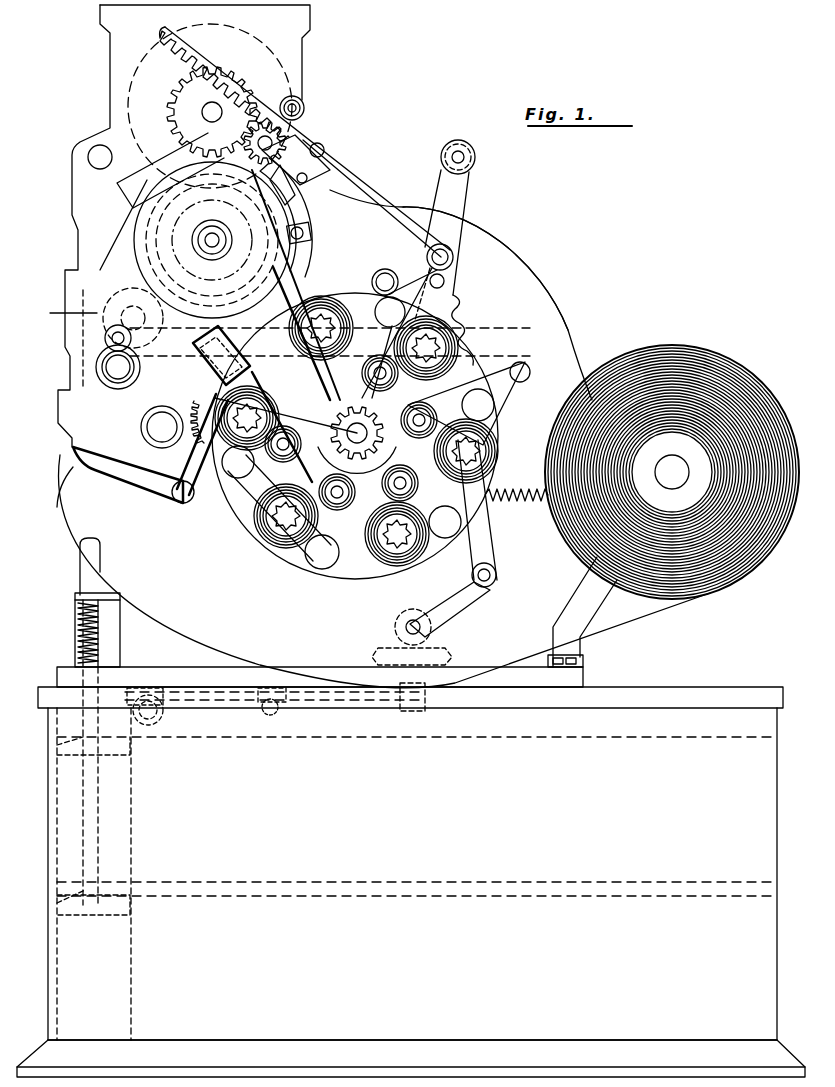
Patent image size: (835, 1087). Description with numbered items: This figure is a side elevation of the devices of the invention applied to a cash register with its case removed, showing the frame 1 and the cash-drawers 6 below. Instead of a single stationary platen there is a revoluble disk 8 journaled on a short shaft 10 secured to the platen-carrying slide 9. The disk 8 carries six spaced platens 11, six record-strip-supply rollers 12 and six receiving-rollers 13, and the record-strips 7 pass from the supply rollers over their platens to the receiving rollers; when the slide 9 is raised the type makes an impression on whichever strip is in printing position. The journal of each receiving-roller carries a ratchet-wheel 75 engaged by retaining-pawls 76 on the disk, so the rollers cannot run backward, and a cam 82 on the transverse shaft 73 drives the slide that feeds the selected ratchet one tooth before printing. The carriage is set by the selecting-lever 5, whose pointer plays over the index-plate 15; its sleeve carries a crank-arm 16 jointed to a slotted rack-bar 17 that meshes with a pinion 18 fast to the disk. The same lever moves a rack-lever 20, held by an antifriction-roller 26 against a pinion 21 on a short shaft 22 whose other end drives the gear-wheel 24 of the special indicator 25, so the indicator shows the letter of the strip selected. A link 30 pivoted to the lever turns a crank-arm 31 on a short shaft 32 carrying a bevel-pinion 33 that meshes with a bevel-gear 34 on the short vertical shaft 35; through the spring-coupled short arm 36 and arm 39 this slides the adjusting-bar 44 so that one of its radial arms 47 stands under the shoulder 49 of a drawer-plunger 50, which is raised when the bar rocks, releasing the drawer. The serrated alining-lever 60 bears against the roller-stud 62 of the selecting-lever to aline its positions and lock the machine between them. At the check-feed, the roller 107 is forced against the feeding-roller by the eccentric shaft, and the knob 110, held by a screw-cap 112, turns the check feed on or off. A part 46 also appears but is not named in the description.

The frame 1 is at (383, 346).
The selecting-lever 5 is at (465, 196).
The cash-drawers 6 is at (411, 882).
The record-strips 7 is at (238, 505).
The revoluble disk 8 is at (312, 560).
The platen-carrying slide 9 is at (346, 431).
The short shaft 10 is at (360, 433).
The platens 11 is at (326, 590).
The record-strip-supply rollers 12 is at (340, 497).
The receiving-rollers 13 is at (490, 440).
The index-plate 15 is at (483, 232).
The crank-arm 16 is at (672, 472).
The slotted rack-bar 17 is at (470, 403).
The pinion 18 is at (300, 450).
The rack-lever 20 is at (305, 135).
The pinion 21 is at (300, 112).
The short shaft 22 is at (318, 156).
The gear-wheel 24 is at (218, 158).
The special indicator 25 is at (210, 106).
The antifriction-roller 26 is at (275, 130).
The link 30 is at (516, 513).
The crank-arm 31 is at (453, 538).
The short shaft 32 is at (422, 628).
The bevel-pinion 33 is at (395, 622).
The bevel-gear 34 is at (452, 655).
The short vertical shaft 35 is at (428, 684).
The short arm 36 is at (355, 700).
The arm 39 is at (245, 696).
The adjusting-bar 44 is at (158, 722).
The pin 46 is at (515, 364).
The radial arms 47 is at (132, 740).
The shoulder 49 is at (112, 692).
The drawer-plungers 50 is at (105, 636).
The alining-lever 60 is at (460, 298).
The roller-stud 62 is at (446, 281).
The transverse shaft 73 is at (133, 300).
The ratchet-wheel 75 is at (372, 283).
The retaining-pawls 76 is at (214, 370).
The cam 82 is at (84, 347).
The roller 107 is at (175, 455).
The knob 110 is at (142, 422).
The screw-cap 112 is at (150, 428).